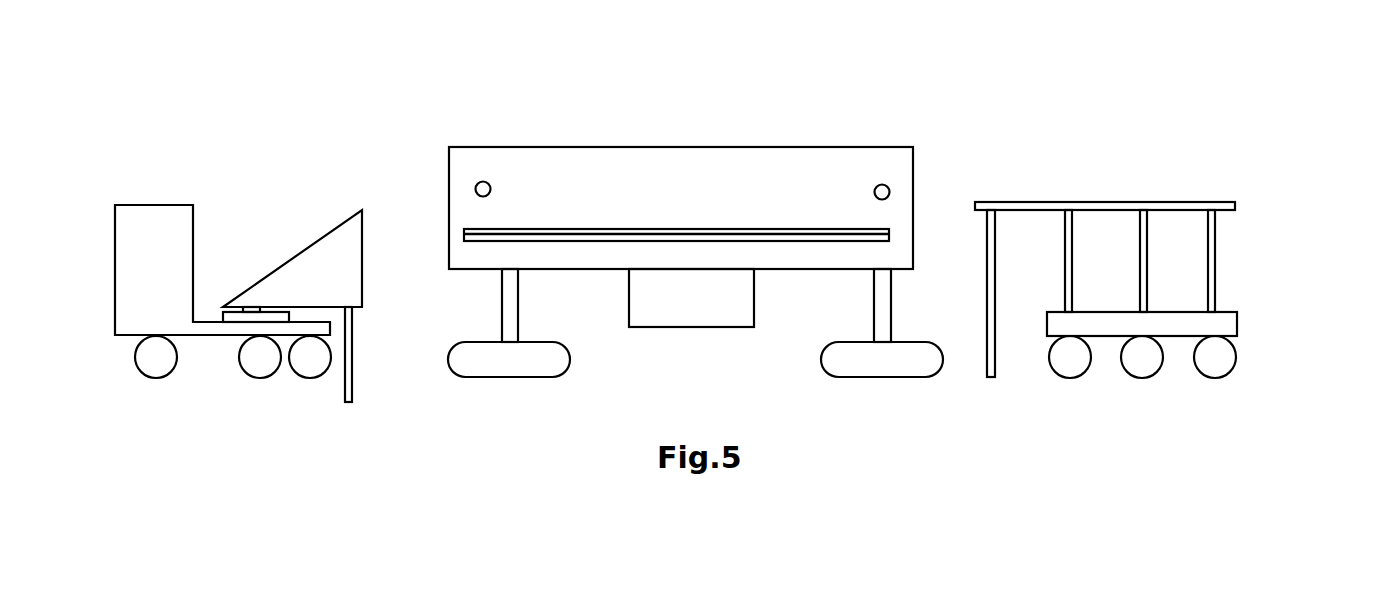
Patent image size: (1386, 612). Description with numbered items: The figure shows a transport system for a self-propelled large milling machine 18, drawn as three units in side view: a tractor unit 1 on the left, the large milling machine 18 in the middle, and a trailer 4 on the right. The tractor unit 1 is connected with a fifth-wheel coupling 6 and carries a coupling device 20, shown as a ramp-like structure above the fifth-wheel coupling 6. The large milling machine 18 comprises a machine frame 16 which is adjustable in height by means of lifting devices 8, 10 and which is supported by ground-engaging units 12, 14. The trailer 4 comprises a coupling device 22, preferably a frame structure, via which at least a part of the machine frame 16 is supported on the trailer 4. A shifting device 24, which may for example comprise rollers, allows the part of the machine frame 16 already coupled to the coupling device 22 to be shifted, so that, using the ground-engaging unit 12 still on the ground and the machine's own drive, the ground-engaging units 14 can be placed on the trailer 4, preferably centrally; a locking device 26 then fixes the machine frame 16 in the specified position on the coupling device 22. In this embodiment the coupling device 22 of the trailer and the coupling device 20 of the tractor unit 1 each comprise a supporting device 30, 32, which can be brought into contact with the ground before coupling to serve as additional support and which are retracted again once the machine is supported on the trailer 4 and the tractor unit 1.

The tractor unit 1 is at (264, 252).
The trailer 4 is at (1293, 282).
The fifth-wheel coupling 6 is at (250, 317).
The lifting device 8 is at (507, 291).
The lifting device 10 is at (874, 301).
The ground-engaging unit 12 is at (523, 365).
The ground-engaging unit 14 is at (857, 357).
The machine frame 16 is at (603, 143).
The large milling machine 18 is at (693, 237).
The coupling device 20 is at (280, 265).
The coupling device 22 is at (1140, 274).
The shifting device 24 is at (842, 202).
The locking device 26 is at (1182, 203).
The supporting device 30 is at (987, 357).
The supporting device 32 is at (352, 373).